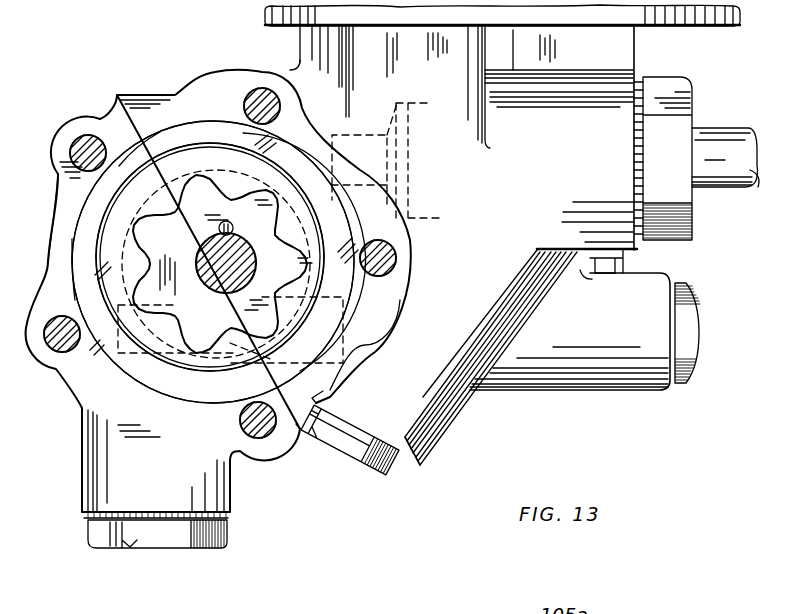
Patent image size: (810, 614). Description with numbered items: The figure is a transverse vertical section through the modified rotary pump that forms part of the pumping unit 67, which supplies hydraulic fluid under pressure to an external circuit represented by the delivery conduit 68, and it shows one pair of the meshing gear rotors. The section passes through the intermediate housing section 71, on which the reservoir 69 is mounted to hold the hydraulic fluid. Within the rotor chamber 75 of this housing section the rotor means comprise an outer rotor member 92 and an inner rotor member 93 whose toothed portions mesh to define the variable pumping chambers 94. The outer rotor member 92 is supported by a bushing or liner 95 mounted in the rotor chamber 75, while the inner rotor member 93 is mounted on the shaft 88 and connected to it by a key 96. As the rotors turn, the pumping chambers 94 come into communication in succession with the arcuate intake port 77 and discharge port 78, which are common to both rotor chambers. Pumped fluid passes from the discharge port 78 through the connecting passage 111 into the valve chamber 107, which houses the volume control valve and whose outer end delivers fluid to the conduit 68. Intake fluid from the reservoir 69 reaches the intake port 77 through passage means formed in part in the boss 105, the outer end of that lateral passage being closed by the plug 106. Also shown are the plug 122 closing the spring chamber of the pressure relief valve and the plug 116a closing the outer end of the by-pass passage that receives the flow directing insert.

The intermediate housing section 71 is at (152, 100).
The rotor chamber 75 is at (147, 150).
The bushing or liner 95 is at (205, 143).
The inner rotor member 93 is at (135, 255).
The shaft 88 is at (196, 264).
The key 96 is at (219, 229).
The outer rotor member 92 is at (68, 200).
The variable pumping chambers 94 is at (72, 239).
The intake port 77 is at (343, 315).
The discharge port 78 is at (303, 233).
The connecting passage 111 is at (358, 130).
The valve chamber 107 is at (440, 95).
The reservoir 69 is at (515, 19).
The pumping unit 67 is at (673, 71).
The delivery conduit 68 is at (735, 130).
The boss 105 is at (612, 388).
The plug 106 is at (688, 322).
The plug 116a is at (355, 458).
The plug 122 is at (148, 542).